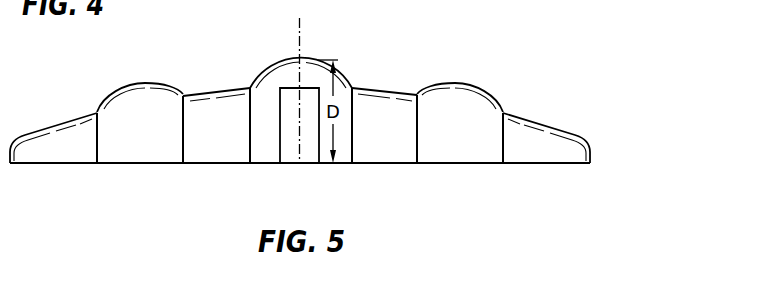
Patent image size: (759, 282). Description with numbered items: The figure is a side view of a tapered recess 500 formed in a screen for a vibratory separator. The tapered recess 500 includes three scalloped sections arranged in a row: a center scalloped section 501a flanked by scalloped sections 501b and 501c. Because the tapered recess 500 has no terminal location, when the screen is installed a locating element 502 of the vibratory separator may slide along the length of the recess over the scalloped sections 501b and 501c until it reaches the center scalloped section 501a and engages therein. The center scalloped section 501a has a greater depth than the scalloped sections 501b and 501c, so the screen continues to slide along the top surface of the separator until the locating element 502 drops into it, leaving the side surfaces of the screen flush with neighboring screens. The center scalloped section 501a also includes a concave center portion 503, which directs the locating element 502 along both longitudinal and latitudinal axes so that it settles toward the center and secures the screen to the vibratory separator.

The tapered recess 500 is at (413, 189).
The center scalloped section 501a is at (267, 148).
The scalloped section 501b is at (137, 148).
The scalloped section 501c is at (460, 146).
The locating element 502 is at (308, 148).
The concave center portion 503 is at (313, 27).